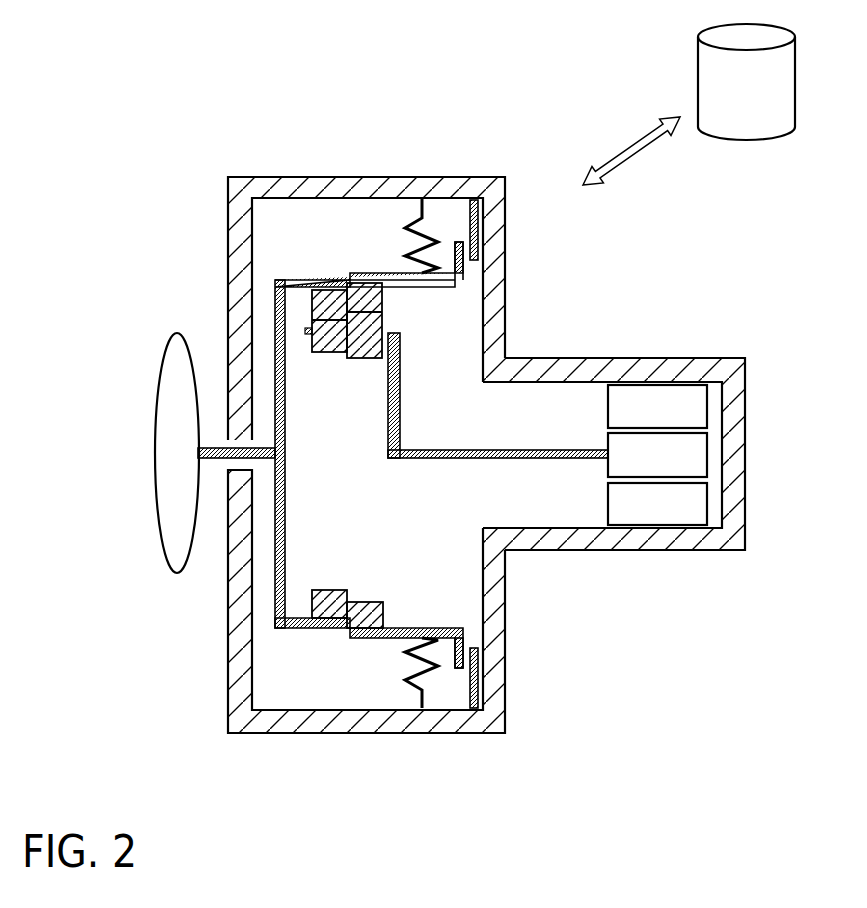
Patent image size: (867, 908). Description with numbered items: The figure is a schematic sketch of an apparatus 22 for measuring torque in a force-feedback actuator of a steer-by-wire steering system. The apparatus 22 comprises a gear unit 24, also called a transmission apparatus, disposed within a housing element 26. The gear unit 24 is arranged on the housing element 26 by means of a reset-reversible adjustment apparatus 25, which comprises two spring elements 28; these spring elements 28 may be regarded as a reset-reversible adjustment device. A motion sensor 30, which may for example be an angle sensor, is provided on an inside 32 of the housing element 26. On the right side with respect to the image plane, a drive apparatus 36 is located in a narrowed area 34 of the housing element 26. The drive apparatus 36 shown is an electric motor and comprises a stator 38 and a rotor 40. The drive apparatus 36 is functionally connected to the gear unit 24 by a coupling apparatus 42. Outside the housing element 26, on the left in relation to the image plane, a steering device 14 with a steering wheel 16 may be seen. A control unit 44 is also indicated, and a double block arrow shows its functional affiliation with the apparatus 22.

The steering device 14 is at (177, 331).
The steering wheel 16 is at (168, 453).
The apparatus 22 is at (120, 128).
The gear unit 24 is at (342, 280).
The reset-reversible adjustment apparatus 25 is at (470, 757).
The housing element 26 is at (565, 372).
The spring element 28 is at (434, 240).
The motion sensor 30 is at (470, 658).
The inside 32 is at (428, 582).
The narrowed area 34 is at (640, 356).
The drive apparatus 36 is at (713, 478).
The stator 38 is at (698, 393).
The rotor 40 is at (698, 442).
The coupling apparatus 42 is at (460, 473).
The control unit 44 is at (748, 122).